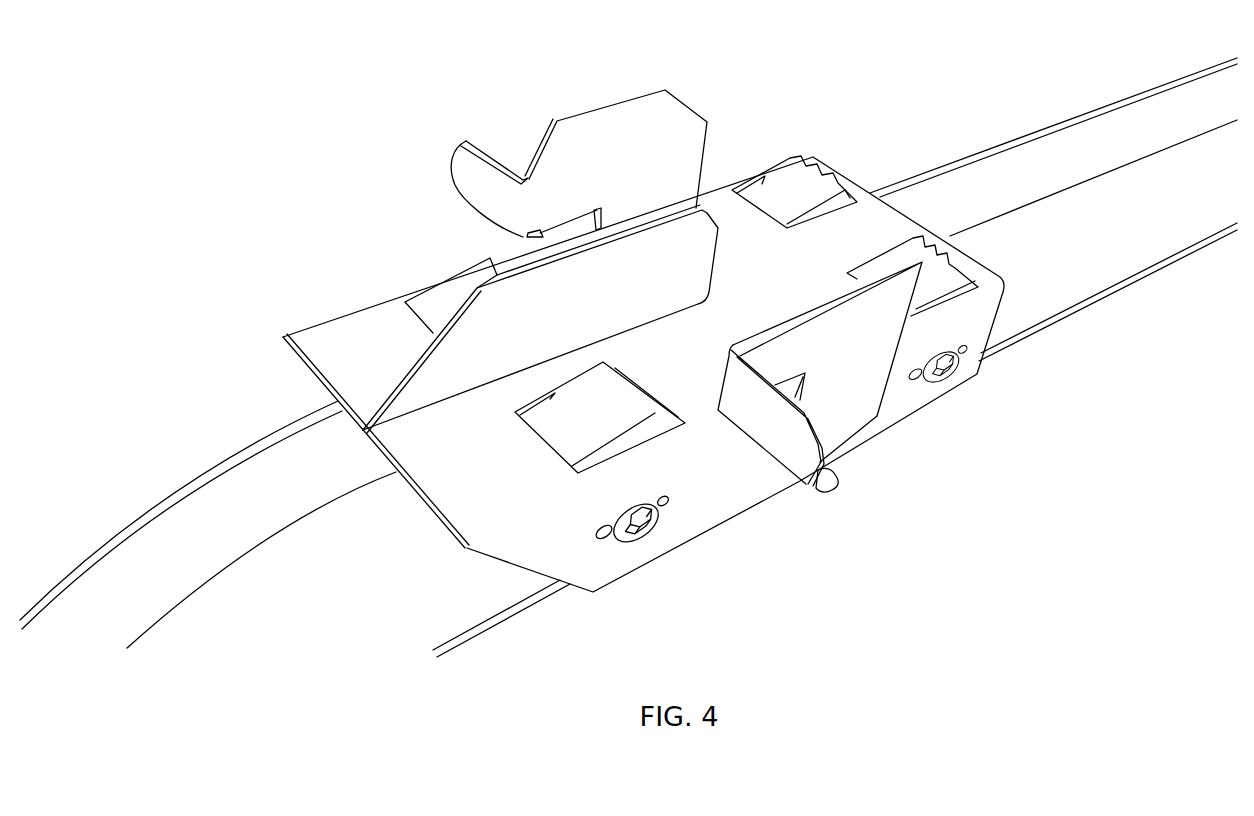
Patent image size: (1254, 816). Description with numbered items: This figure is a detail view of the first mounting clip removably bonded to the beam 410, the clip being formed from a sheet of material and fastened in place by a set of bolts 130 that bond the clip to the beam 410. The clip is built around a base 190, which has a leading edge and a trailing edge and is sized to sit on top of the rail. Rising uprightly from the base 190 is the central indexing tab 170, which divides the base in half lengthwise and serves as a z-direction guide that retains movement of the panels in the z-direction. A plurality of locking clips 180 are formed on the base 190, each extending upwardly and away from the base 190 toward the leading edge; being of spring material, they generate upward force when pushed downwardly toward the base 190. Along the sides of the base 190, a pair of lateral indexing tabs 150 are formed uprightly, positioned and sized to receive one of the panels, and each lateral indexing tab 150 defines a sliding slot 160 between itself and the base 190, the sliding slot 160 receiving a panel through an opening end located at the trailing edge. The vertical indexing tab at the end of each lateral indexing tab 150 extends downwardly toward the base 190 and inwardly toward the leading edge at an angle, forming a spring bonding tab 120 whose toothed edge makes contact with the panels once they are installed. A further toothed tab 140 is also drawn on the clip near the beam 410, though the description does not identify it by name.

The spring bonding tab 120 is at (837, 493).
The bolts 130 is at (660, 545).
The serrated tab 140 is at (797, 181).
The lateral indexing tabs 150 is at (663, 113).
The sliding slot 160 is at (577, 227).
The central indexing tab 170 is at (427, 378).
The locking clips 180 is at (610, 417).
The base 190 is at (437, 487).
The beam 410 is at (1083, 267).